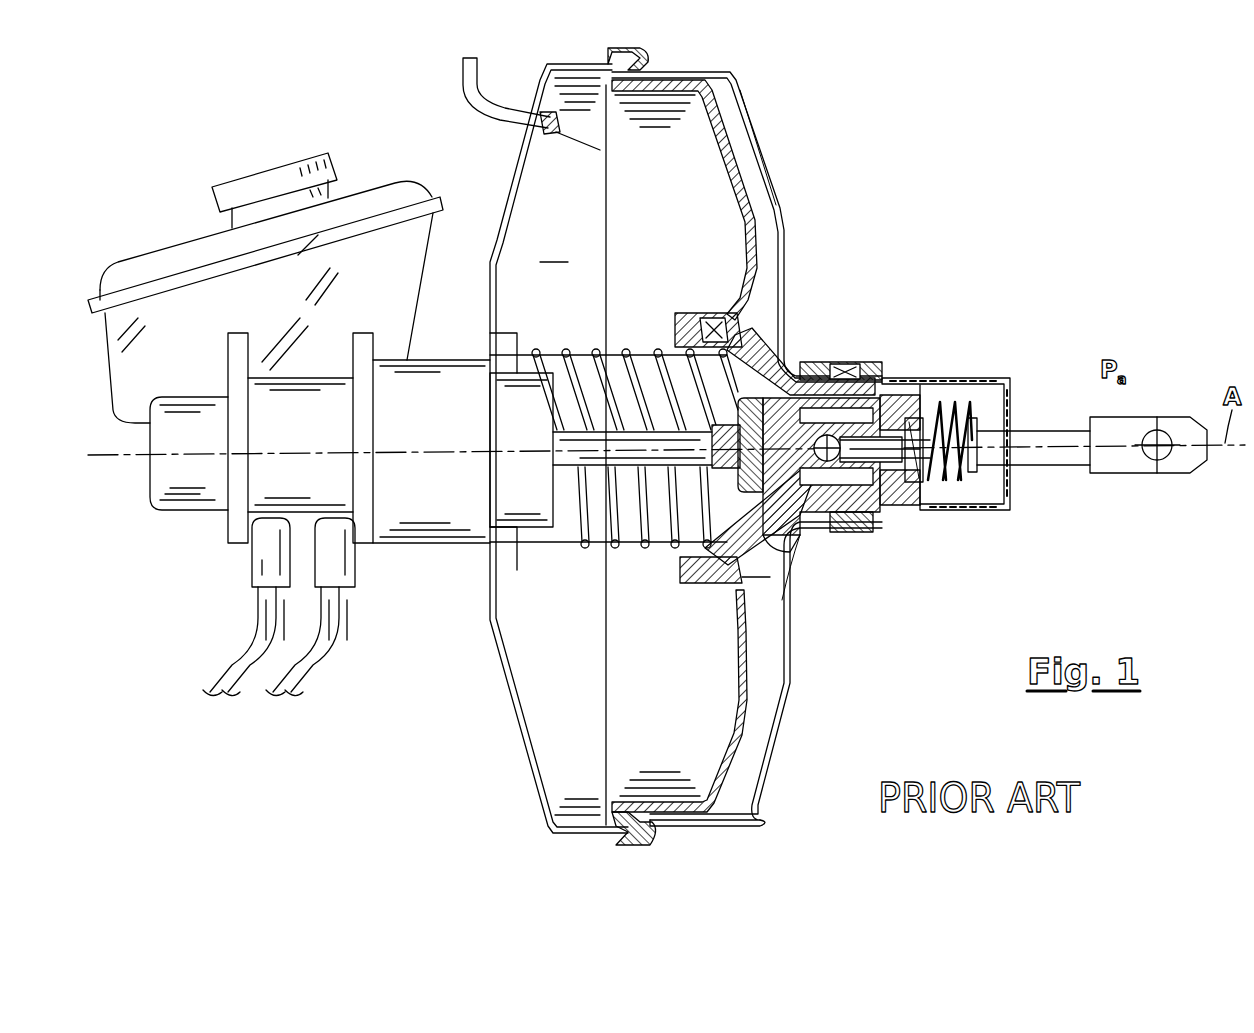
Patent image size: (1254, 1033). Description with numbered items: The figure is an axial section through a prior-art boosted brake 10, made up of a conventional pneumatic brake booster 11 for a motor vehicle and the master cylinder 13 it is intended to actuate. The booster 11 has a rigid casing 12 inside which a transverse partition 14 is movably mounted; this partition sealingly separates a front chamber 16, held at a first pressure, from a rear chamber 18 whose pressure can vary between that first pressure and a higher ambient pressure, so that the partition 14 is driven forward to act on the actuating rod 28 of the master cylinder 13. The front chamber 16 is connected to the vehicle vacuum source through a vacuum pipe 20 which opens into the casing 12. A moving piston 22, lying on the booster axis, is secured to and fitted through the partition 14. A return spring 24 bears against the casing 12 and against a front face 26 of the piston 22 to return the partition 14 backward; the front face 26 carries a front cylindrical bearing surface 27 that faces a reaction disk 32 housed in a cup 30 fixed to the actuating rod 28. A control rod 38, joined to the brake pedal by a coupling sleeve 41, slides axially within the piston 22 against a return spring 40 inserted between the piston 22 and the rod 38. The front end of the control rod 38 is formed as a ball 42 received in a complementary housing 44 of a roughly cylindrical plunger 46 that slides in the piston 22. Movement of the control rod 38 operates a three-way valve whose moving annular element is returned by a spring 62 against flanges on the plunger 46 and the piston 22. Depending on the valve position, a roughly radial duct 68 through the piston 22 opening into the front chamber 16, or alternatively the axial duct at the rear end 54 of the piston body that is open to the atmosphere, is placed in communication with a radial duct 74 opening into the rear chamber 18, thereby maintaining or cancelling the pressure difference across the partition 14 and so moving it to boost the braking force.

The boosted brake 10 is at (952, 215).
The pneumatic brake booster 11 is at (780, 230).
The rigid casing 12 is at (762, 143).
The master cylinder 13 is at (270, 470).
The transverse partition 14 is at (730, 130).
The front chamber 16 is at (573, 250).
The rear chamber 18 is at (761, 595).
The vacuum pipe 20 is at (462, 108).
The moving piston 22 is at (770, 352).
The return spring 24 is at (648, 352).
The front face 26 is at (745, 328).
The front cylindrical bearing surface 27 is at (826, 362).
The actuating rod 28 is at (583, 550).
The cup 30 is at (745, 478).
The reaction disk 32 is at (793, 547).
The control rod 38 is at (1040, 431).
The return spring 40 is at (945, 395).
The coupling sleeve 41 is at (1172, 417).
The ball 42 is at (872, 528).
The complementary housing 44 is at (948, 490).
The plunger 46 is at (650, 440).
The rear end 54 is at (1000, 402).
The spring 62 is at (905, 395).
The radial duct 68 is at (860, 364).
The radial duct 74 is at (820, 537).